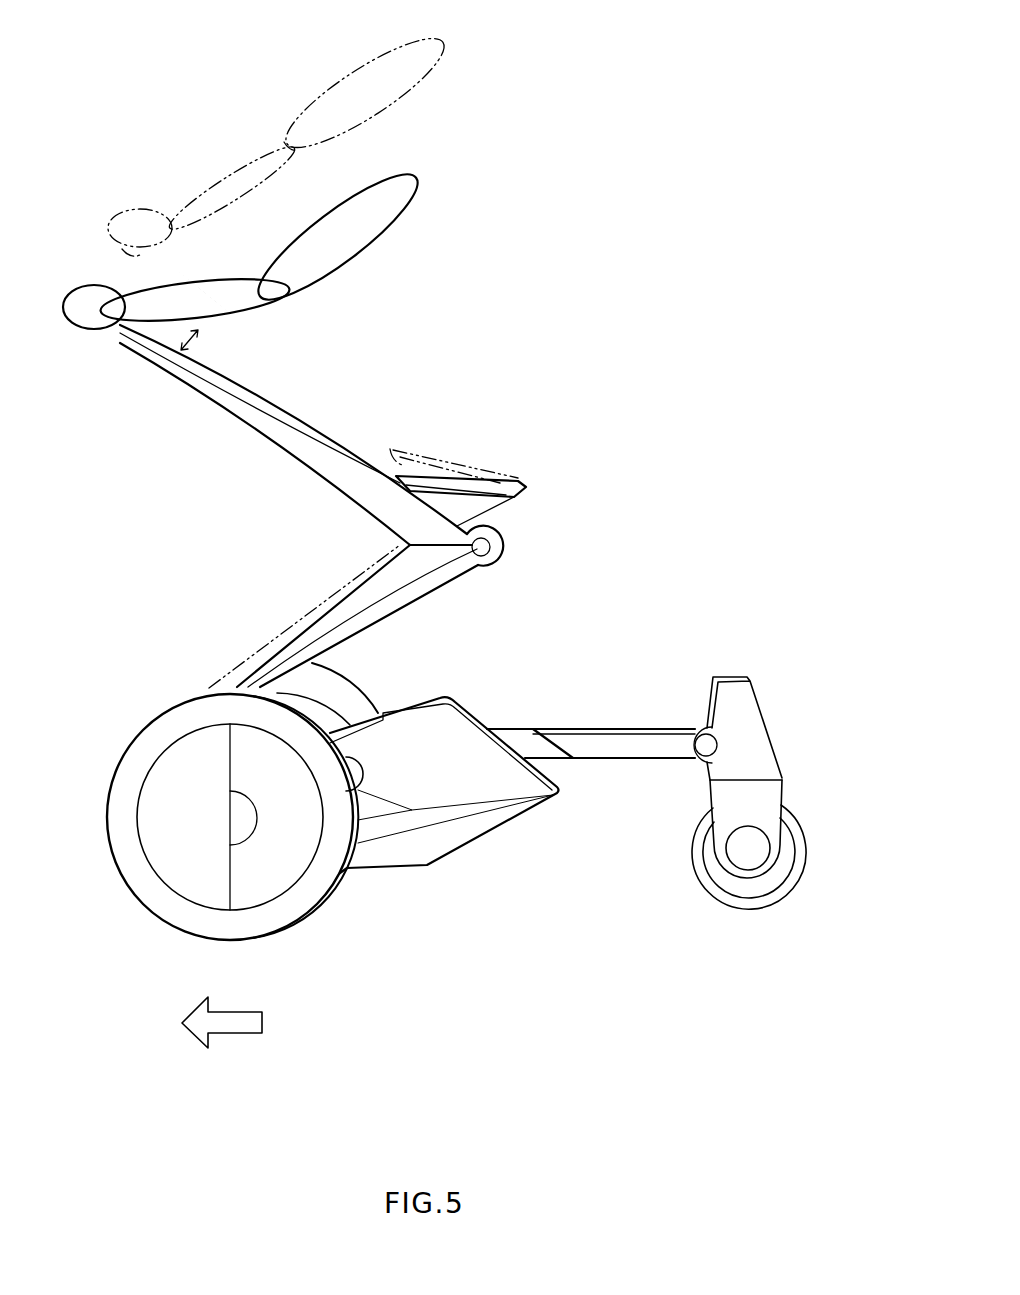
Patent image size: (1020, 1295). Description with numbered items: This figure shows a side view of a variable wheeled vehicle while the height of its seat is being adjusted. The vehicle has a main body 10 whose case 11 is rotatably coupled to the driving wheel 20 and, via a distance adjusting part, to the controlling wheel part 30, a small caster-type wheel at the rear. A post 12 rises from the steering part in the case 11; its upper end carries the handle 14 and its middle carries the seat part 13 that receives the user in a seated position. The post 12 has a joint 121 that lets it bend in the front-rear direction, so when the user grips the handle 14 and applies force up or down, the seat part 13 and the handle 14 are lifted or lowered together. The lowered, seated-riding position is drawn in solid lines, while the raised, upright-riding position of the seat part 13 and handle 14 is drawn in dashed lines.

The main body 10 is at (486, 741).
The case 11 is at (418, 725).
The post 12 is at (357, 600).
The joint 121 is at (495, 546).
The seat part 13 is at (452, 486).
The handle 14 is at (103, 340).
The driving wheel 20 is at (128, 920).
The controlling wheel part 30 is at (751, 928).